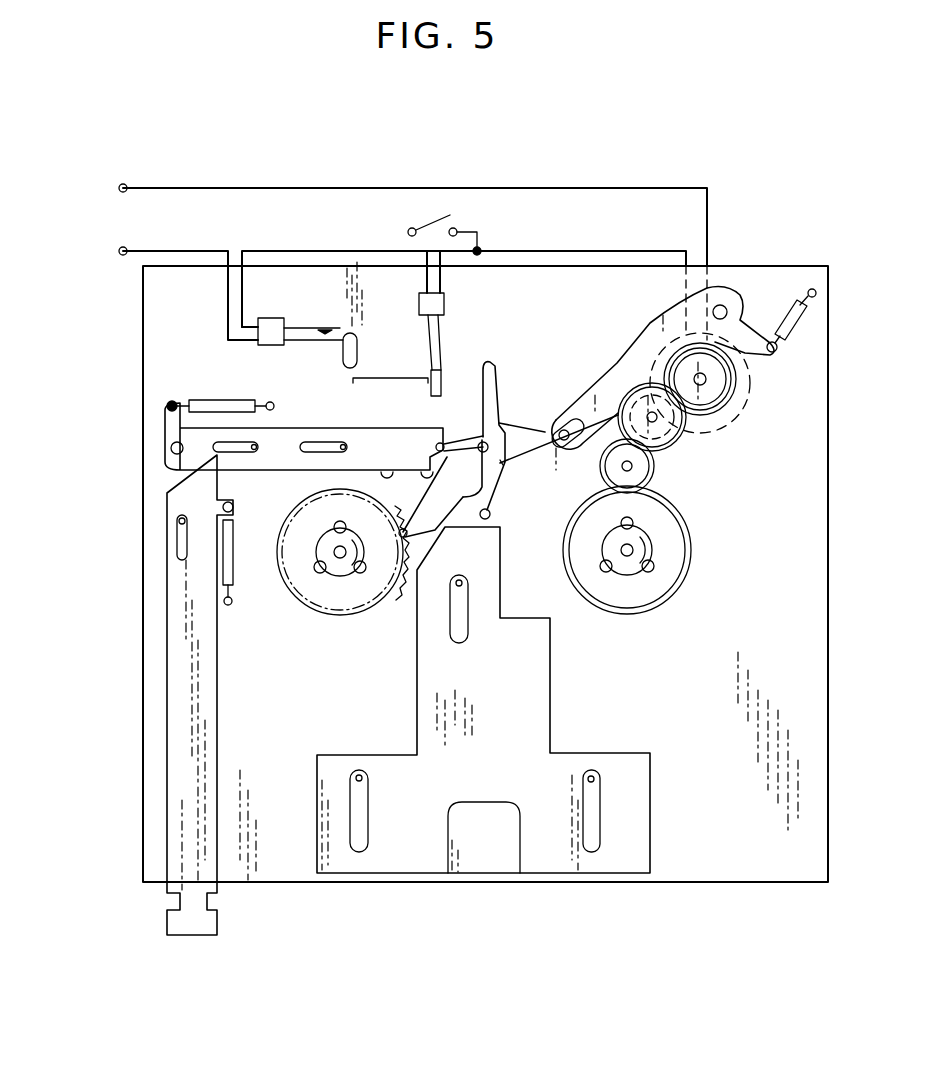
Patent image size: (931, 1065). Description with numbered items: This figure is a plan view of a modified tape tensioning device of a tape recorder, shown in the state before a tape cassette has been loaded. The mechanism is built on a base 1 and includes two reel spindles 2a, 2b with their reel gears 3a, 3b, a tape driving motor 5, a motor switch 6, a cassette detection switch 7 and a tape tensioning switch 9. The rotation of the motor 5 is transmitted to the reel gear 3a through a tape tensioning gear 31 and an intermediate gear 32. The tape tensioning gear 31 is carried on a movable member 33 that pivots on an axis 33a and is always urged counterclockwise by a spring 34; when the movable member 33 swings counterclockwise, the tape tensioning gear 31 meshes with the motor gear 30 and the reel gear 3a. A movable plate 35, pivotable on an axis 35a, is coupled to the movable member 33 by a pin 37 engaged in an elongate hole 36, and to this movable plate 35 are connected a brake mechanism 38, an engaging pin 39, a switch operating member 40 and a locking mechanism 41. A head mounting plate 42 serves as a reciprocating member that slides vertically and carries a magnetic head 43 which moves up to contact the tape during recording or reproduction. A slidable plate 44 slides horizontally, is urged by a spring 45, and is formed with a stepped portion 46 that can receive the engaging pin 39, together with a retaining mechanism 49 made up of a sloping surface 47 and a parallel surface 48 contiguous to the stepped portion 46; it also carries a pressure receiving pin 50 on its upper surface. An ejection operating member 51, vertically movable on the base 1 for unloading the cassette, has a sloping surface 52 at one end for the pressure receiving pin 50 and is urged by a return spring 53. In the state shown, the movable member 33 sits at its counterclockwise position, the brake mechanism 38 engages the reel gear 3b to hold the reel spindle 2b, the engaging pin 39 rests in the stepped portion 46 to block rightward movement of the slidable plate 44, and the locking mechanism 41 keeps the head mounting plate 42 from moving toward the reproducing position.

The base 1 is at (143, 690).
The reel spindle 2a is at (630, 598).
The reel spindle 2b is at (333, 575).
The reel gear 3a is at (650, 612).
The reel gear 3b is at (355, 614).
The tape driving motor 5 is at (737, 425).
The motor switch 6 is at (440, 217).
The cassette detection switch 7 is at (274, 318).
The tape tensioning switch 9 is at (445, 302).
The motor gear 30 is at (738, 390).
The tape tensioning gear 31 is at (680, 432).
The intermediate gear 32 is at (656, 478).
The movable member 33 is at (648, 327).
The axis 33a is at (722, 305).
The spring 34 is at (800, 290).
The movable plate 35 is at (537, 422).
The axis 35a is at (503, 465).
The elongate hole 36 is at (566, 425).
The pin 37 is at (560, 425).
The brake mechanism 38 is at (413, 528).
The engaging pin 39 is at (448, 440).
The switch operating member 40 is at (490, 362).
The locking mechanism 41 is at (495, 513).
The head mounting plate 42 is at (552, 712).
The magnetic head 43 is at (490, 801).
The slidable plate 44 is at (305, 428).
The spring 45 is at (212, 400).
The stepped portion 46 is at (446, 452).
The sloping surface 47 is at (425, 470).
The parallel surface 48 is at (385, 470).
The retaining mechanism 49 is at (390, 362).
The pressure receiving pin 50 is at (170, 448).
The ejection operating member 51 is at (217, 728).
The sloping surface 52 is at (175, 482).
The return spring 53 is at (238, 565).